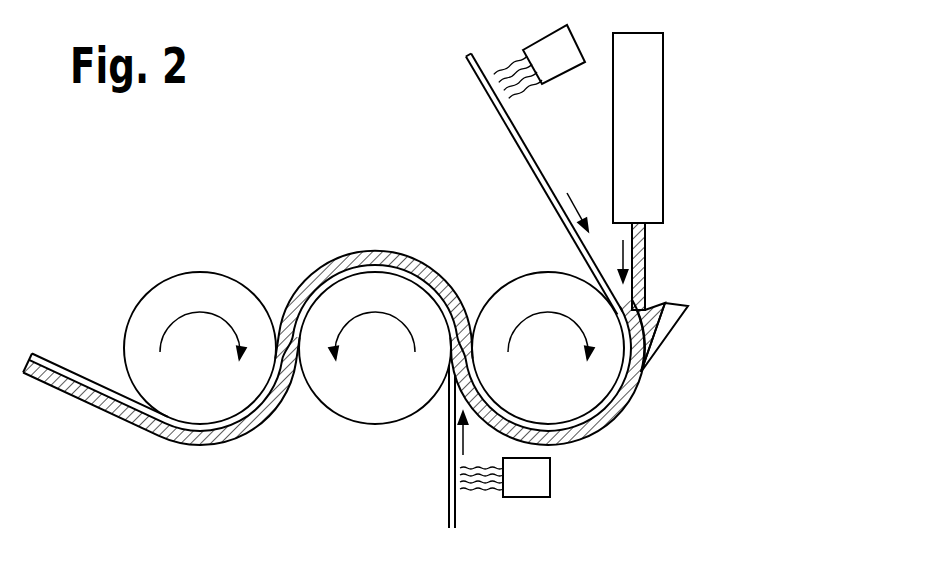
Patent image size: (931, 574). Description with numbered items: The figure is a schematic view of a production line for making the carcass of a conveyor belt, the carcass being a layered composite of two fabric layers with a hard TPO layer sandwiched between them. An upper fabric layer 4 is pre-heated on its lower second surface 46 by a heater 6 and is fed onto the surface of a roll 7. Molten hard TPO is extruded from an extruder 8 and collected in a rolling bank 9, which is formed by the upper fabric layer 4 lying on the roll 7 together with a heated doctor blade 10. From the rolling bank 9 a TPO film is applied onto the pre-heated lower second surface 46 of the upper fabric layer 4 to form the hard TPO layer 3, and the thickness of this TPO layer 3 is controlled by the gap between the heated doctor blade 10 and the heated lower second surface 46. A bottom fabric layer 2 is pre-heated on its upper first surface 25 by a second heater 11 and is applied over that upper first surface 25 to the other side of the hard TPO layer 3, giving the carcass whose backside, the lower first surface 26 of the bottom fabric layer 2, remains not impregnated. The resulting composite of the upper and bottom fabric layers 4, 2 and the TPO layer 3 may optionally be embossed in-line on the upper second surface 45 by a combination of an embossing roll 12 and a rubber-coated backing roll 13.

The bottom fabric layer 2 is at (450, 465).
The TPO layer 3 is at (613, 417).
The upper fabric layer 4 is at (489, 184).
The heater 6 is at (557, 48).
The roll 7 is at (528, 300).
The extruder 8 is at (655, 160).
The rolling bank 9 is at (661, 311).
The heated doctor blade 10 is at (667, 320).
The heater 11 is at (547, 485).
The embossing roll 12 is at (183, 297).
The rubber-coated backing roll 13 is at (357, 297).
The upper first surface 25 is at (465, 513).
The lower first surface 26 is at (439, 513).
The upper second surface 45 is at (496, 128).
The lower second surface 46 is at (520, 112).